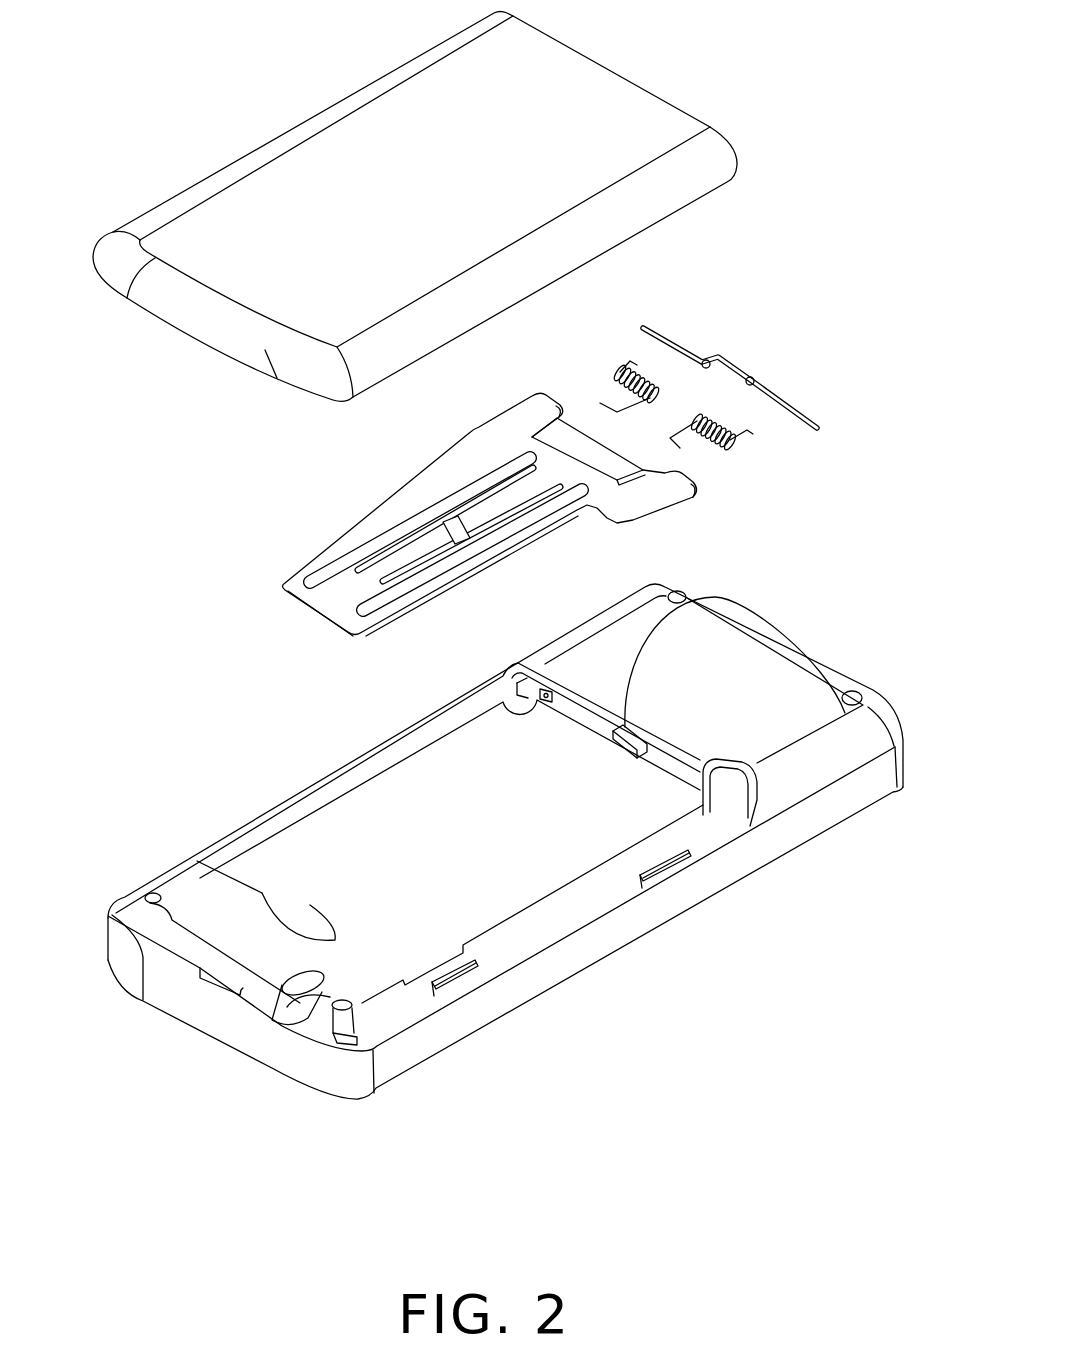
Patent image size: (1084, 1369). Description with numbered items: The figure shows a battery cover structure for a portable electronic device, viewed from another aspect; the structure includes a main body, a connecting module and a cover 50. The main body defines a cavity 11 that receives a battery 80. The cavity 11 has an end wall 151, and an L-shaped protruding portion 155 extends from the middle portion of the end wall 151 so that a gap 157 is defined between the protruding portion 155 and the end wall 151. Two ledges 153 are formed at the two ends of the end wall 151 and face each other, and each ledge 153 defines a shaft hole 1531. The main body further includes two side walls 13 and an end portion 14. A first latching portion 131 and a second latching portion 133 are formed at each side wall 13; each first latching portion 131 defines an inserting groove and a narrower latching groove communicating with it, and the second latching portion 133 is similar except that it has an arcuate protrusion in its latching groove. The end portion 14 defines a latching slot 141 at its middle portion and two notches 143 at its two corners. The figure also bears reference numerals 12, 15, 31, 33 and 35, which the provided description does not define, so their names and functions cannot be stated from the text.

The cavity 11 is at (348, 777).
The first side wall 12 is at (553, 920).
The side wall 13 is at (275, 808).
The end portion 14 is at (180, 943).
The second end wall 15 is at (797, 705).
The sliding latch plate 31 is at (417, 507).
The spring 33 is at (730, 438).
The shaft 35 is at (767, 402).
The cover 50 is at (620, 117).
The battery 80 is at (423, 763).
The first latching portion 131 is at (458, 980).
The second latching portion 133 is at (657, 865).
The latching slot 141 is at (220, 987).
The notch 143 is at (340, 1040).
The end wall 151 is at (727, 760).
The ledge 153 is at (535, 683).
The protruding portion 155 is at (623, 723).
The gap 157 is at (650, 746).
The shaft hole 1531 is at (500, 702).